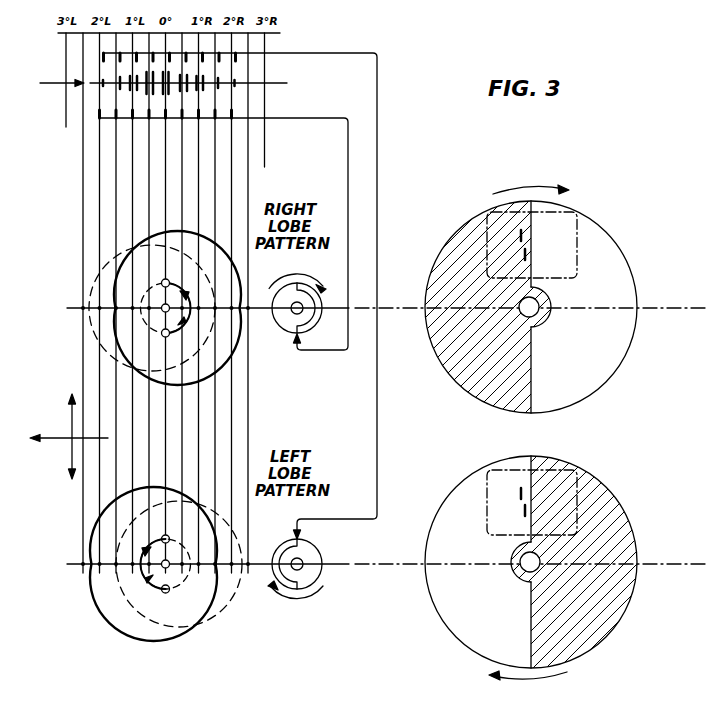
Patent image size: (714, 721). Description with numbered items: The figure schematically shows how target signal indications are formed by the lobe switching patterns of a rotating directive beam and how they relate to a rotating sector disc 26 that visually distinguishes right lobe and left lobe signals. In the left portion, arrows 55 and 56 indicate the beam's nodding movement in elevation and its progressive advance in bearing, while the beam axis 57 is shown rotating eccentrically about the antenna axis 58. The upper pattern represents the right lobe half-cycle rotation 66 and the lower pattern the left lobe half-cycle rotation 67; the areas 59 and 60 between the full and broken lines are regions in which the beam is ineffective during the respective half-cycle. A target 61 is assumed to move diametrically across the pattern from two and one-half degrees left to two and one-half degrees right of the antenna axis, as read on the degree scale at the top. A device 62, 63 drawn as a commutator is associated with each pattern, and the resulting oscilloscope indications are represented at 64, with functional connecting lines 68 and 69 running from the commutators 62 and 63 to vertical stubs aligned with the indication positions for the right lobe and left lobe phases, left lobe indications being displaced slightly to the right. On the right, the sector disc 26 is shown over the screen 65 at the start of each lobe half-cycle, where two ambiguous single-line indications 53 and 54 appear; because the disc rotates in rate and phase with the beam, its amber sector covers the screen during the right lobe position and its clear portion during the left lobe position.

The sector disc 26 is at (633, 268).
The left lobe target indication 53 is at (115, 86).
The right lobe target indication 54 is at (212, 86).
The elevation movement arrow 55 is at (70, 452).
The bearing movement arrow 56 is at (57, 437).
The beam axis 57 is at (162, 282).
The antenna axis 58 is at (162, 311).
The right lobe ineffective area 59 is at (100, 275).
The left lobe ineffective area 60 is at (228, 597).
The target 61 is at (82, 306).
The right lobe commutator 62 is at (284, 320).
The left lobe commutator 63 is at (279, 550).
The oscilloscope target indications 64 is at (49, 86).
The screen 65 is at (560, 221).
The right lobe half-cycle rotation 66 is at (183, 322).
The left lobe half-cycle rotation 67 is at (150, 577).
The right lobe functional connecting line 68 is at (347, 151).
The left lobe functional connecting line 69 is at (380, 155).